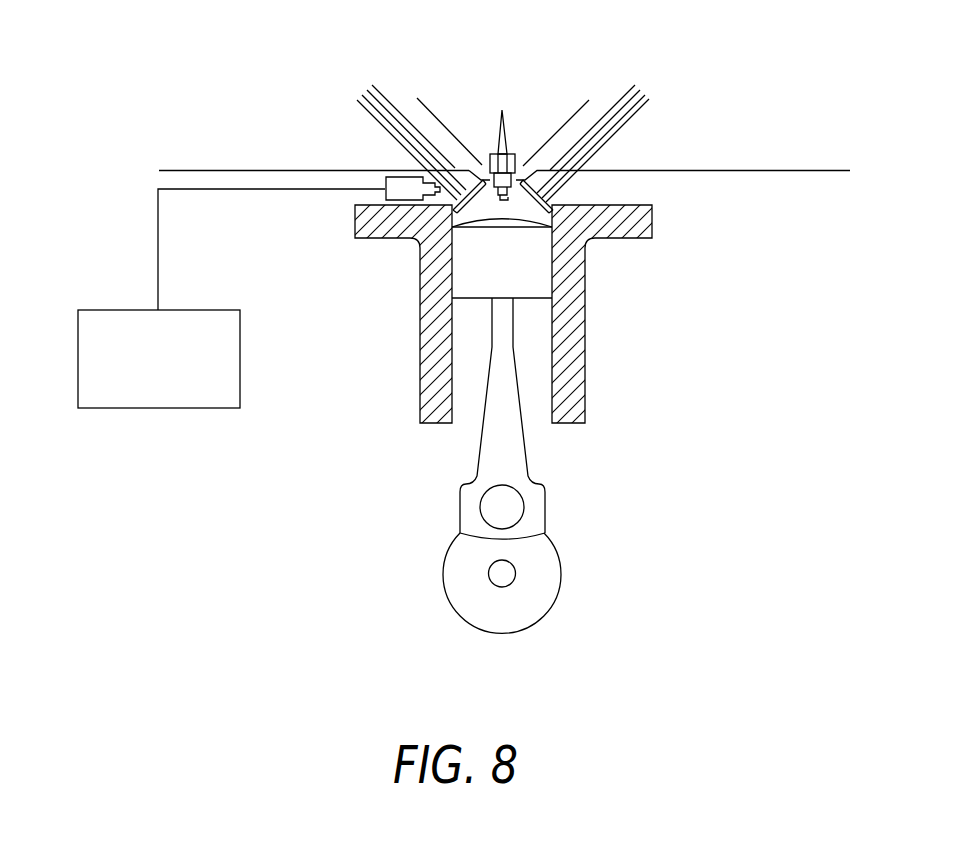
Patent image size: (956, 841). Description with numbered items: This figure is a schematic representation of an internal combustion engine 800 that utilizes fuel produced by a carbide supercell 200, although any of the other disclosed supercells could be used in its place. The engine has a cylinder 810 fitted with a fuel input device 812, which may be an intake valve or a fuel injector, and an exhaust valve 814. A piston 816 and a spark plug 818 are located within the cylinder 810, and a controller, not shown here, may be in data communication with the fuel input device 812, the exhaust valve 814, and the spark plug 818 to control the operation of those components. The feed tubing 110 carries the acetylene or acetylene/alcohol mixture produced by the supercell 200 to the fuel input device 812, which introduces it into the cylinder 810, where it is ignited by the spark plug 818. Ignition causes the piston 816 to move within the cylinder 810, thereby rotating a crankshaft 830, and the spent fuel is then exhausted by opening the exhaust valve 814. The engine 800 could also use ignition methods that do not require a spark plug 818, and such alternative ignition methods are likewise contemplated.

The internal combustion engine 800 is at (590, 47).
The cylinder 810 is at (570, 378).
The fuel input device 812 is at (390, 175).
The exhaust valve 814 is at (548, 198).
The piston 816 is at (535, 267).
The spark plug 818 is at (491, 150).
The crankshaft 830 is at (530, 597).
The feed tubing 110 is at (158, 237).
The carbide supercell 200 is at (167, 368).